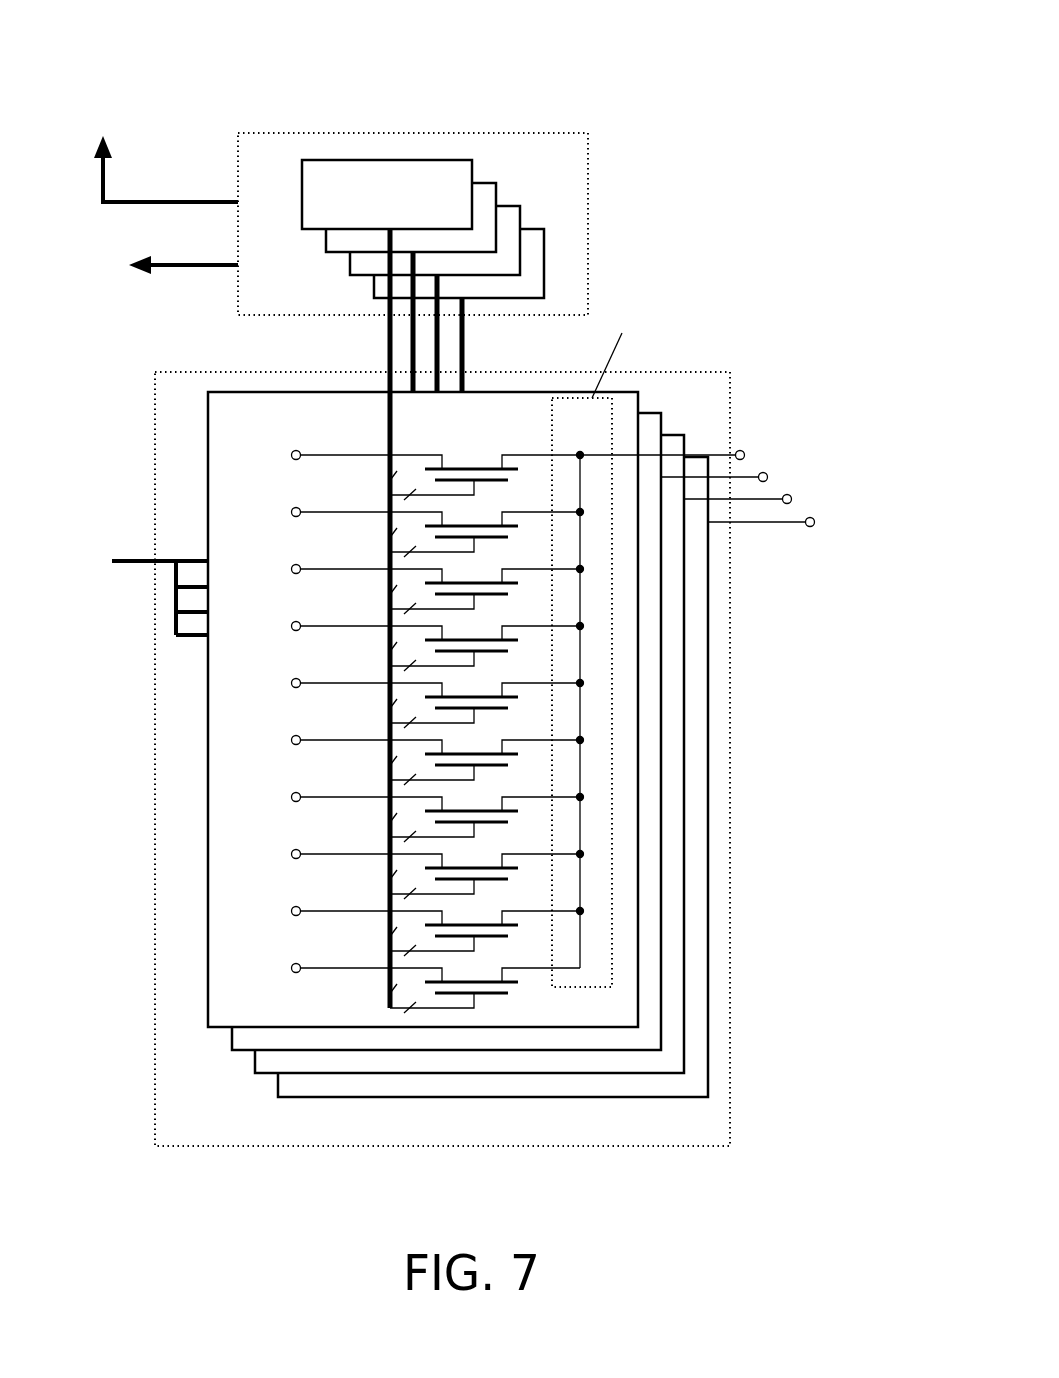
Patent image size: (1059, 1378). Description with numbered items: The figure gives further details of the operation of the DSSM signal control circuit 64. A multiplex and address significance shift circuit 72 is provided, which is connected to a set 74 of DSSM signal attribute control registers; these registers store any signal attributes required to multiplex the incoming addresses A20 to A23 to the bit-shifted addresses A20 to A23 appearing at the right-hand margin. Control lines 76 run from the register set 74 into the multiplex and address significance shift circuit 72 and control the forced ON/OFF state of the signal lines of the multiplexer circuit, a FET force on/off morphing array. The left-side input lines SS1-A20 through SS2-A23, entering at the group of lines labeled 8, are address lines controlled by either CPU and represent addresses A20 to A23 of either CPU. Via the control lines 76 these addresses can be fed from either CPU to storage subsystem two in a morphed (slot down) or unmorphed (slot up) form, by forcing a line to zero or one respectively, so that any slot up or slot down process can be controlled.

The DSSM signal control circuit 64 is at (675, 128).
The set of DSSM signal attribute control registers 74 is at (585, 205).
The control lines 76 is at (390, 342).
The multiplex and address significance shift circuit 72 is at (623, 368).
The SS1/2 A20-A23 input lines 8 is at (120, 565).